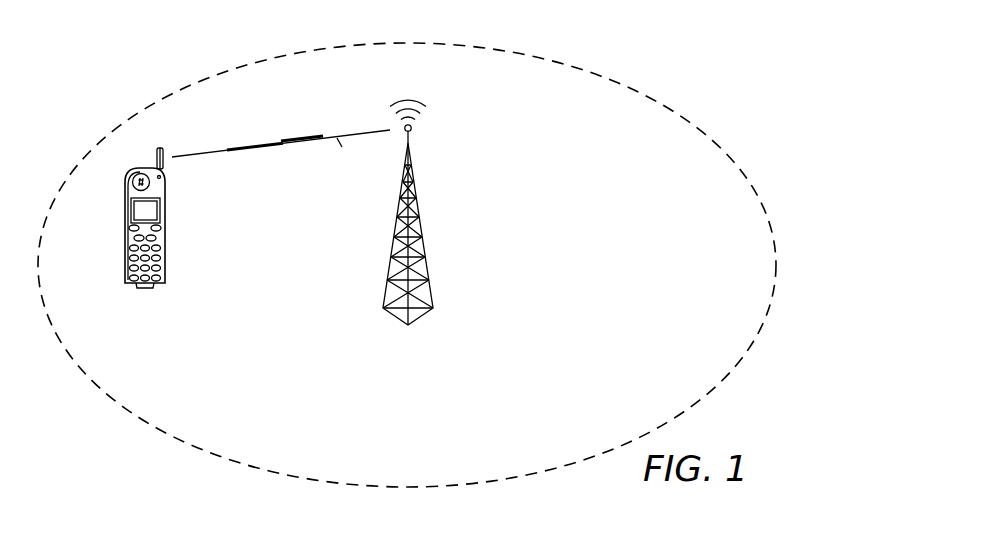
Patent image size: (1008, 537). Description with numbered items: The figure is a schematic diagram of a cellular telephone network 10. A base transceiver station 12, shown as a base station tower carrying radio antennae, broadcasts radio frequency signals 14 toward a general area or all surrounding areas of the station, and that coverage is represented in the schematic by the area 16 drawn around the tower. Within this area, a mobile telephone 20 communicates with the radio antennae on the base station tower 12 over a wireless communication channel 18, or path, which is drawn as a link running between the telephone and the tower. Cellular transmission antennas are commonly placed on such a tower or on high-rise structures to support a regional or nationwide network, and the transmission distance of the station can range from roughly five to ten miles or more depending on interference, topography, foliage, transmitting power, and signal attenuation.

The cellular telephone network 10 is at (644, 50).
The base transceiver station 12 is at (423, 236).
The radio frequency signals 14 is at (415, 100).
The area 16 is at (178, 91).
The wireless communication channel 18 is at (322, 138).
The mobile telephone 20 is at (142, 289).